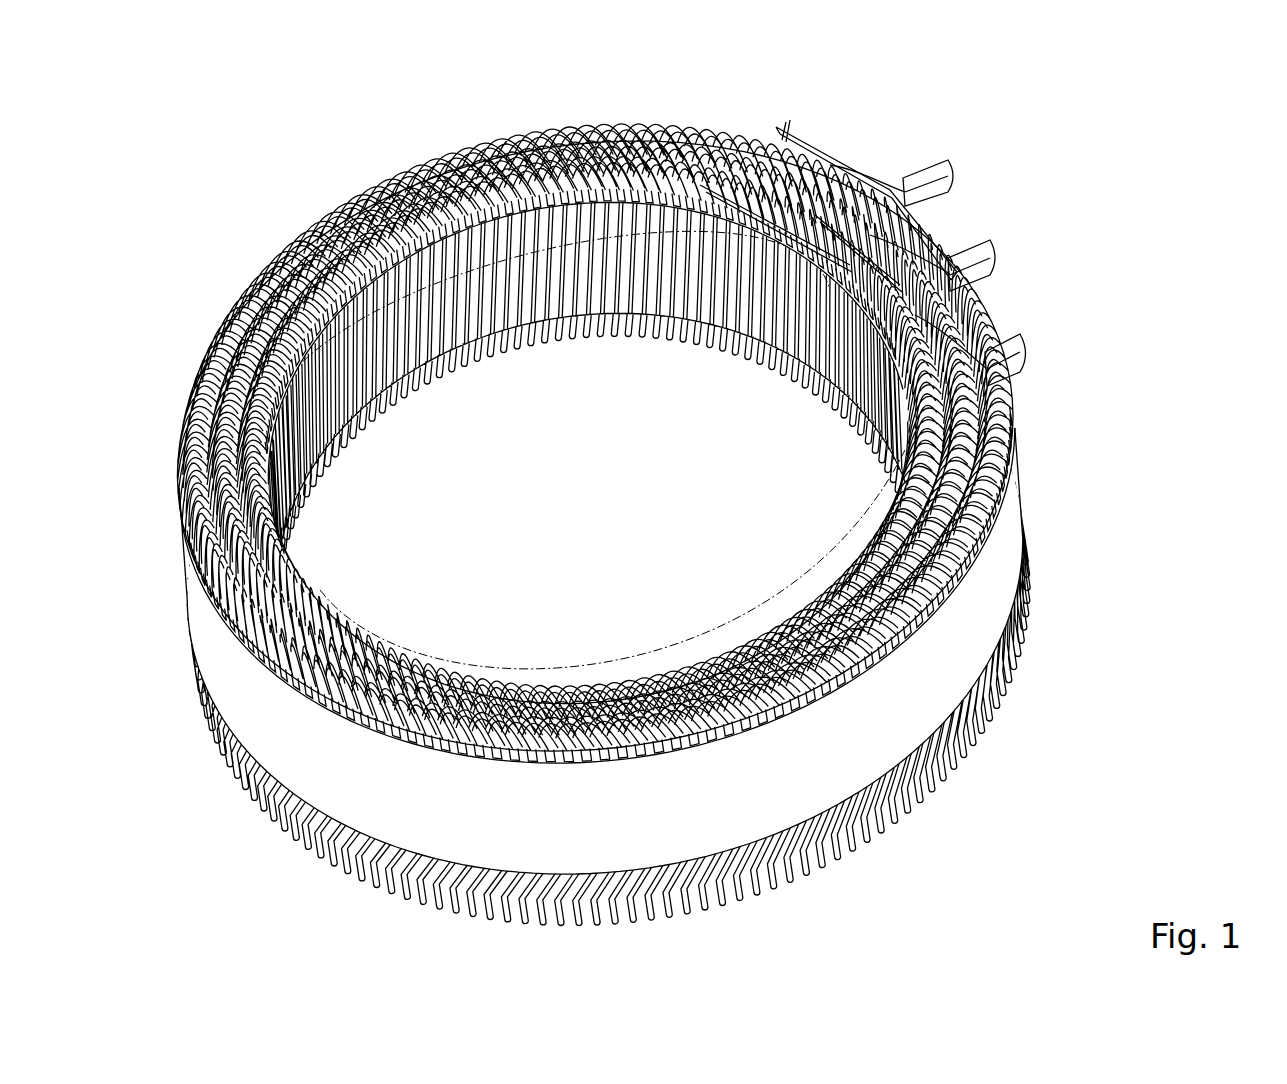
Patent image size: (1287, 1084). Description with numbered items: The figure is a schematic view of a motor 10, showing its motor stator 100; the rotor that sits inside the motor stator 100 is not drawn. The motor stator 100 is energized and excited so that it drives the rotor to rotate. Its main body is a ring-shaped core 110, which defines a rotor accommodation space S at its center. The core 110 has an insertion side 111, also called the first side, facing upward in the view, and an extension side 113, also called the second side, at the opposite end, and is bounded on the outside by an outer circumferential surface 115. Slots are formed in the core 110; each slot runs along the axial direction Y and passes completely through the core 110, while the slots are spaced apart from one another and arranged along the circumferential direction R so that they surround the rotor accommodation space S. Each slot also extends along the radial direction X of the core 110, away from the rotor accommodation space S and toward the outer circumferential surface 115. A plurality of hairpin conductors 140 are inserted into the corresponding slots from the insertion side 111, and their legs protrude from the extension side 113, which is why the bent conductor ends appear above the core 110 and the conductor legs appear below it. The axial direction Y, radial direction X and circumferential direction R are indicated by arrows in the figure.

The motor 10 is at (1263, 76).
The motor stator 100 is at (882, 152).
The core 110 is at (995, 580).
The insertion side 111 is at (985, 460).
The extension side 113 is at (1022, 658).
The outer circumferential surface 115 is at (990, 553).
The hairpin conductors 140 is at (930, 452).
The rotor accommodation space S is at (343, 509).
The circumferential direction R is at (1008, 738).
The radial direction X is at (642, 533).
The axial direction Y is at (684, 928).